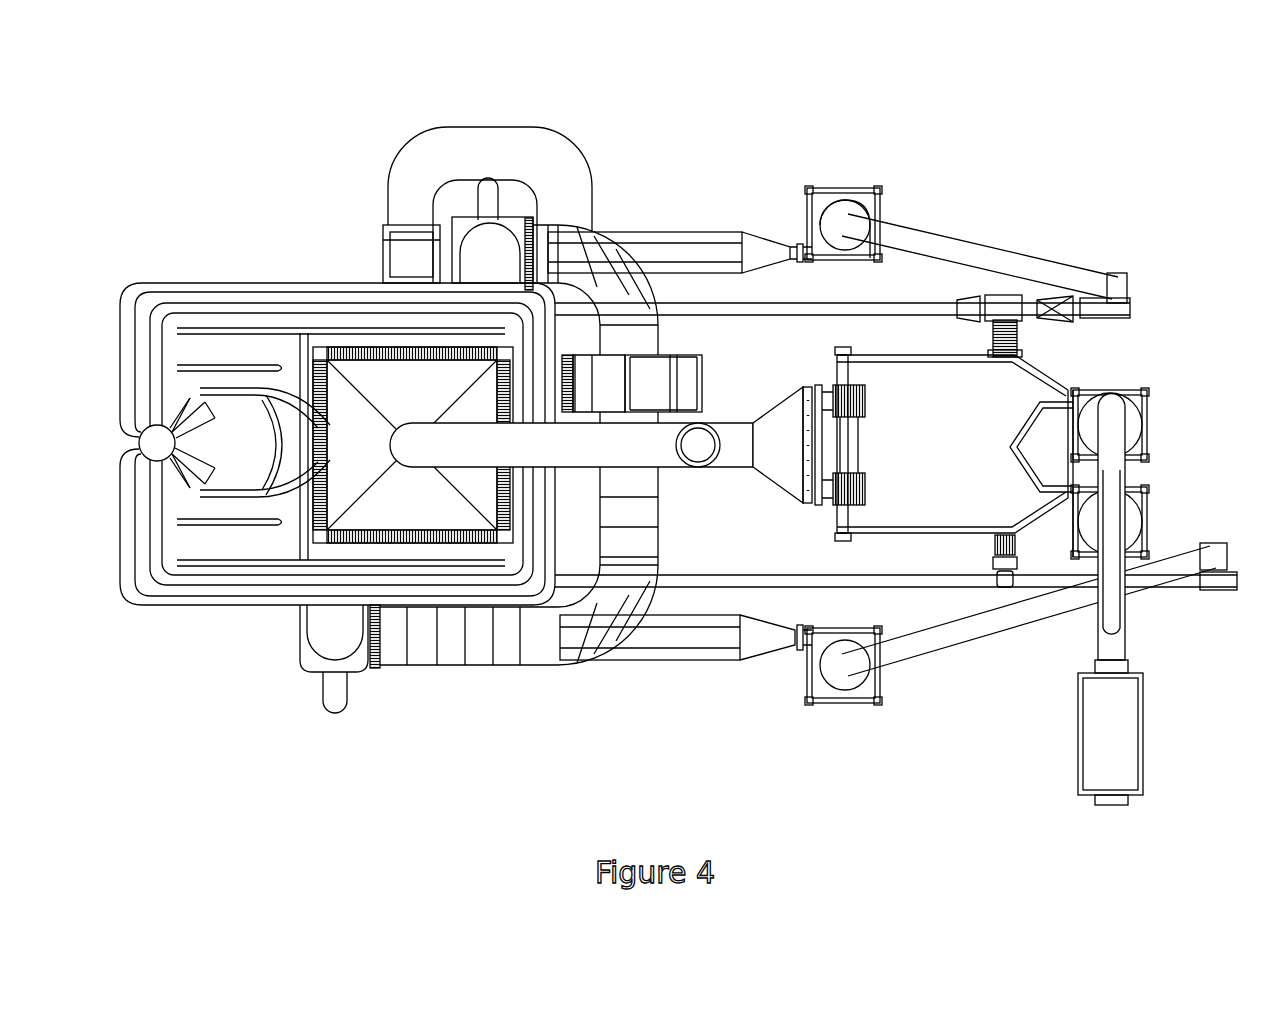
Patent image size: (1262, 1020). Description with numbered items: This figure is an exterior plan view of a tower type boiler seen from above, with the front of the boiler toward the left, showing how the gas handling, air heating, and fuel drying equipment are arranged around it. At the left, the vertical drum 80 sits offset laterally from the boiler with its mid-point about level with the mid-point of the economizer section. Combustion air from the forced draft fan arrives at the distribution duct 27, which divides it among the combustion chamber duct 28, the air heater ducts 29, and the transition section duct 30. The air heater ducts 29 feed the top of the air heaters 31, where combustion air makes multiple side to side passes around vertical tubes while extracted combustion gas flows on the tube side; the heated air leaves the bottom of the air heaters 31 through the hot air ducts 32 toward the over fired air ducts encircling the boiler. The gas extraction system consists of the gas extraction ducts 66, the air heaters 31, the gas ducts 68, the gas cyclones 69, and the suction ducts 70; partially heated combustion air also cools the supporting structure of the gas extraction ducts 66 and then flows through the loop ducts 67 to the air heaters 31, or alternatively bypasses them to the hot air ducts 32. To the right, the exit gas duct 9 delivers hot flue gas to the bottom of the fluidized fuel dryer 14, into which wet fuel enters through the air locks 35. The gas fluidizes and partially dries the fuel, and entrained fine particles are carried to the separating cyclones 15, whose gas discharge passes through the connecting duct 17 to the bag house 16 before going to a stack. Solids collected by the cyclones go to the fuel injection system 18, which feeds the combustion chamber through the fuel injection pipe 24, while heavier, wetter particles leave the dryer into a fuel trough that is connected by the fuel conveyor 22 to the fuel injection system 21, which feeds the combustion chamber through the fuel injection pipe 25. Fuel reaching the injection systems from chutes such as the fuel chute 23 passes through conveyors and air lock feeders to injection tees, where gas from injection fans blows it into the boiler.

The exit gas duct 9 is at (655, 440).
The fluidized fuel dryer 14 is at (895, 495).
The separating cyclones 15 is at (1150, 500).
The bag house 16 is at (1143, 745).
The connecting duct 17 is at (1130, 570).
The fuel injection system 18 is at (1105, 600).
The fuel injection system 21 is at (1128, 270).
The fuel conveyor 22 is at (993, 545).
The fuel chute 23 is at (1018, 345).
The fuel injection pipe 24 is at (737, 590).
The fuel injection pipe 25 is at (745, 265).
The distribution duct 27 is at (704, 385).
The combustion chamber duct 28 is at (735, 302).
The air heater ducts 29 is at (575, 280).
The transition section duct 30 is at (612, 375).
The air heaters 31 is at (463, 215).
The hot air ducts 32 is at (415, 140).
The air locks 35 is at (838, 390).
The gas extraction ducts 66 is at (533, 217).
The loop ducts 67 is at (490, 190).
The gas ducts 68 is at (625, 250).
The gas cyclones 69 is at (862, 190).
The suction ducts 70 is at (945, 240).
The vertical drum 80 is at (138, 444).